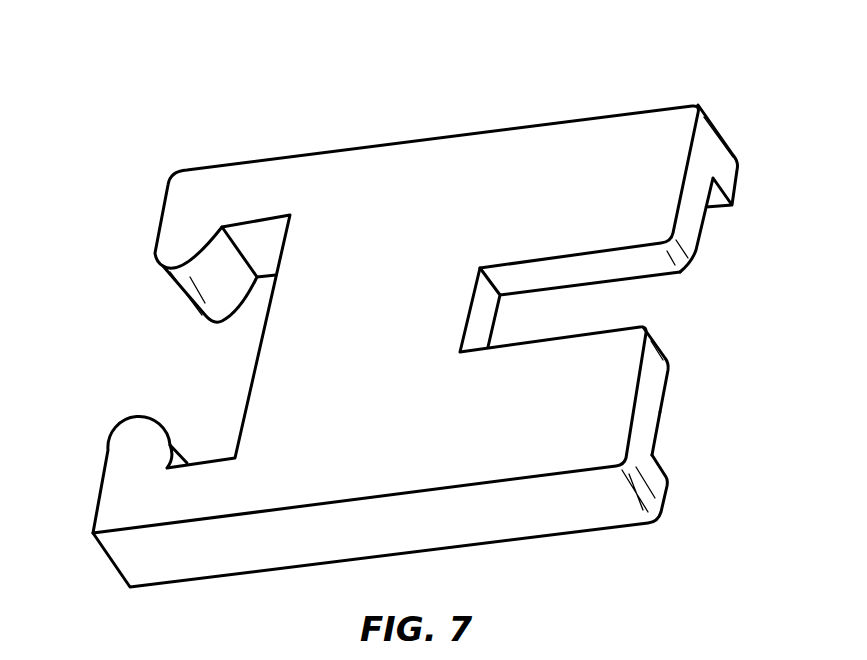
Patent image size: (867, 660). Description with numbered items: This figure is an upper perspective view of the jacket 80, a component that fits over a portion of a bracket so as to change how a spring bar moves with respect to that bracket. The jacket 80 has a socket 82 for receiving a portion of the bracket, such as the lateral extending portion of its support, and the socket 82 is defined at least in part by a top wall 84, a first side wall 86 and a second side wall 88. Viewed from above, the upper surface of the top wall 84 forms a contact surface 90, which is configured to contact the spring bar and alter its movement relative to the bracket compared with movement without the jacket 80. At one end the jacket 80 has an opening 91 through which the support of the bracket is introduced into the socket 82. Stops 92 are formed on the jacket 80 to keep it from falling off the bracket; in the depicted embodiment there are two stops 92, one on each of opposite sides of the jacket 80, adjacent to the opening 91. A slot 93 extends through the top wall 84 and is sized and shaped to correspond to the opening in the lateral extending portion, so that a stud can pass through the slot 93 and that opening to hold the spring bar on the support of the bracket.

The jacket 80 is at (525, 63).
The socket 82 is at (662, 415).
The top wall 84 is at (653, 379).
The first side wall 86 is at (665, 474).
The second side wall 88 is at (717, 197).
The contact surface 90 is at (387, 248).
The opening 91 is at (265, 217).
The stops 92 is at (192, 368).
The slot 93 is at (622, 282).